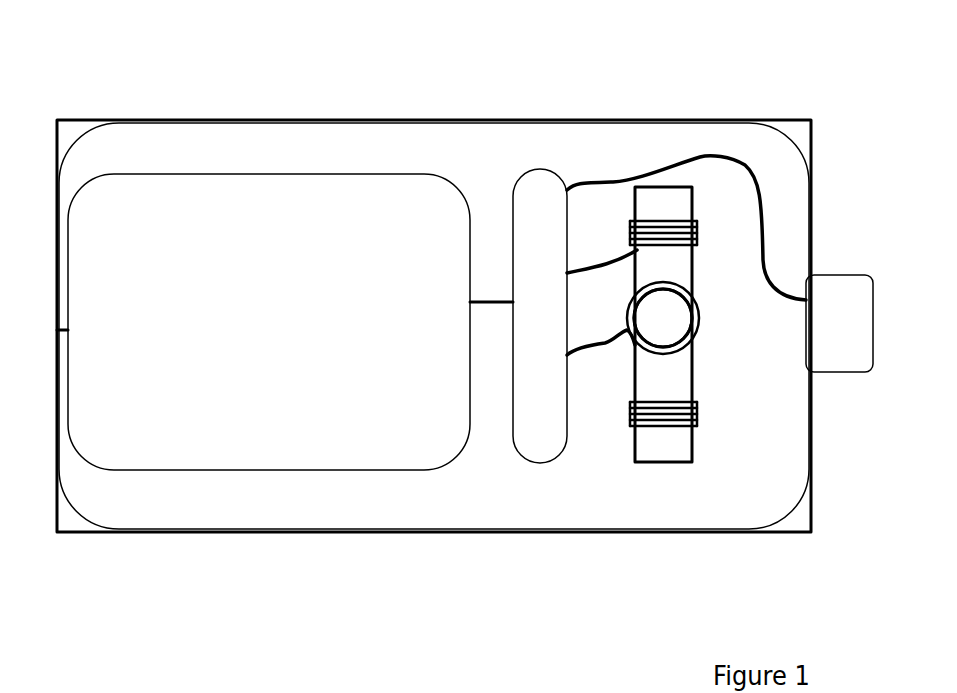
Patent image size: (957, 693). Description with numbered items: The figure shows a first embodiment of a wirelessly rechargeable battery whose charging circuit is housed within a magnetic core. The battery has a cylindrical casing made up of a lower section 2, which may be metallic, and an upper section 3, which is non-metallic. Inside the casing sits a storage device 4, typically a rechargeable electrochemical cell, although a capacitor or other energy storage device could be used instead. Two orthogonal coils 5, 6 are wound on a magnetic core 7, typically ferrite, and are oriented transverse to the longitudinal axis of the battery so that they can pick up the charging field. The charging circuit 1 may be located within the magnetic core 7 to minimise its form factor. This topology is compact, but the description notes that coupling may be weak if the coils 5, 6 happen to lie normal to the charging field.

The charging circuit 1 is at (538, 438).
The lower section 2 is at (237, 120).
The upper section 3 is at (720, 120).
The storage device 4 is at (208, 427).
The coil 5 is at (695, 253).
The coil 6 is at (697, 330).
The magnetic core 7 is at (662, 323).